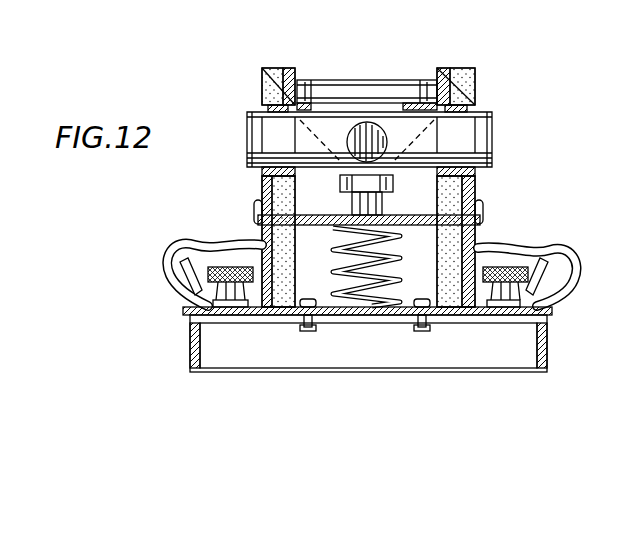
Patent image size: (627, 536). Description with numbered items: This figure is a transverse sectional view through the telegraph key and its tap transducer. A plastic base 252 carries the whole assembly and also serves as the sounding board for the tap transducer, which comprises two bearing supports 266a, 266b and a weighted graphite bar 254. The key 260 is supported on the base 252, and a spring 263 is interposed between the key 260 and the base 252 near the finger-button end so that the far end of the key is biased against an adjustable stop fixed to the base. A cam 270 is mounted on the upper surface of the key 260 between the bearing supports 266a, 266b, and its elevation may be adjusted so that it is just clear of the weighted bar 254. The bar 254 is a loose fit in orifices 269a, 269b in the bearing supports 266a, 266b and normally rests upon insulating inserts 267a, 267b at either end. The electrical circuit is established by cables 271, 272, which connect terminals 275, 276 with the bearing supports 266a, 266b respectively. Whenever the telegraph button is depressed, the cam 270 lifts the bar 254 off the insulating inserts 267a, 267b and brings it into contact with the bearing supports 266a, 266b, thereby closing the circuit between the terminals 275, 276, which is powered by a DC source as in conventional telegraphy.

The plastic base 252 is at (183, 312).
The weighted graphite bar 254 is at (368, 125).
The key 260 is at (393, 214).
The spring 263 is at (331, 273).
The bearing support 266a is at (260, 70).
The bearing support 266b is at (473, 50).
The insulating insert 267a is at (262, 171).
The insulating insert 267b is at (478, 172).
The orifice 269a is at (262, 111).
The orifice 269b is at (478, 111).
The cam 270 is at (343, 186).
The cable 271 is at (165, 268).
The cable 272 is at (584, 268).
The terminal 275 is at (212, 268).
The terminal 276 is at (512, 268).